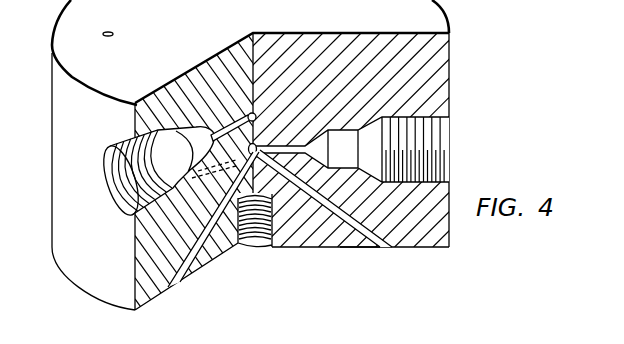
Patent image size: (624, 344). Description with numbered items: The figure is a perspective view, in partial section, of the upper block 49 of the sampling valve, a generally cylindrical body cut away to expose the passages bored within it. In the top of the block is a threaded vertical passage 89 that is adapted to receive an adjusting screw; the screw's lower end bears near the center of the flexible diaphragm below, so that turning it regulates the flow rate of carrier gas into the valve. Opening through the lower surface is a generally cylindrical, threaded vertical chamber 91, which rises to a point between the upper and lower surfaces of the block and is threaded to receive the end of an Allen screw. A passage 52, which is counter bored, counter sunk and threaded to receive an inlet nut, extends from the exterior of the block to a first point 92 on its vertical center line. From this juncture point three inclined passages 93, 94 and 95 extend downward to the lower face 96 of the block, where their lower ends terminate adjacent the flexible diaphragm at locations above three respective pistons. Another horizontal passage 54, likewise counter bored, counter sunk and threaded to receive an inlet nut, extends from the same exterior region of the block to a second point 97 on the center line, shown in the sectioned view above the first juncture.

The upper block 49 is at (51, 52).
The threaded vertical passage 89 is at (110, 30).
The passage 52 is at (433, 123).
The horizontal passage 54 is at (126, 213).
The threaded vertical chamber 91 is at (260, 246).
The first point 92 is at (256, 146).
The inclined passage 93 is at (382, 248).
The inclined passage 94 is at (206, 190).
The inclined passage 95 is at (205, 252).
The lower face 96 is at (357, 248).
The second point 97 is at (251, 112).